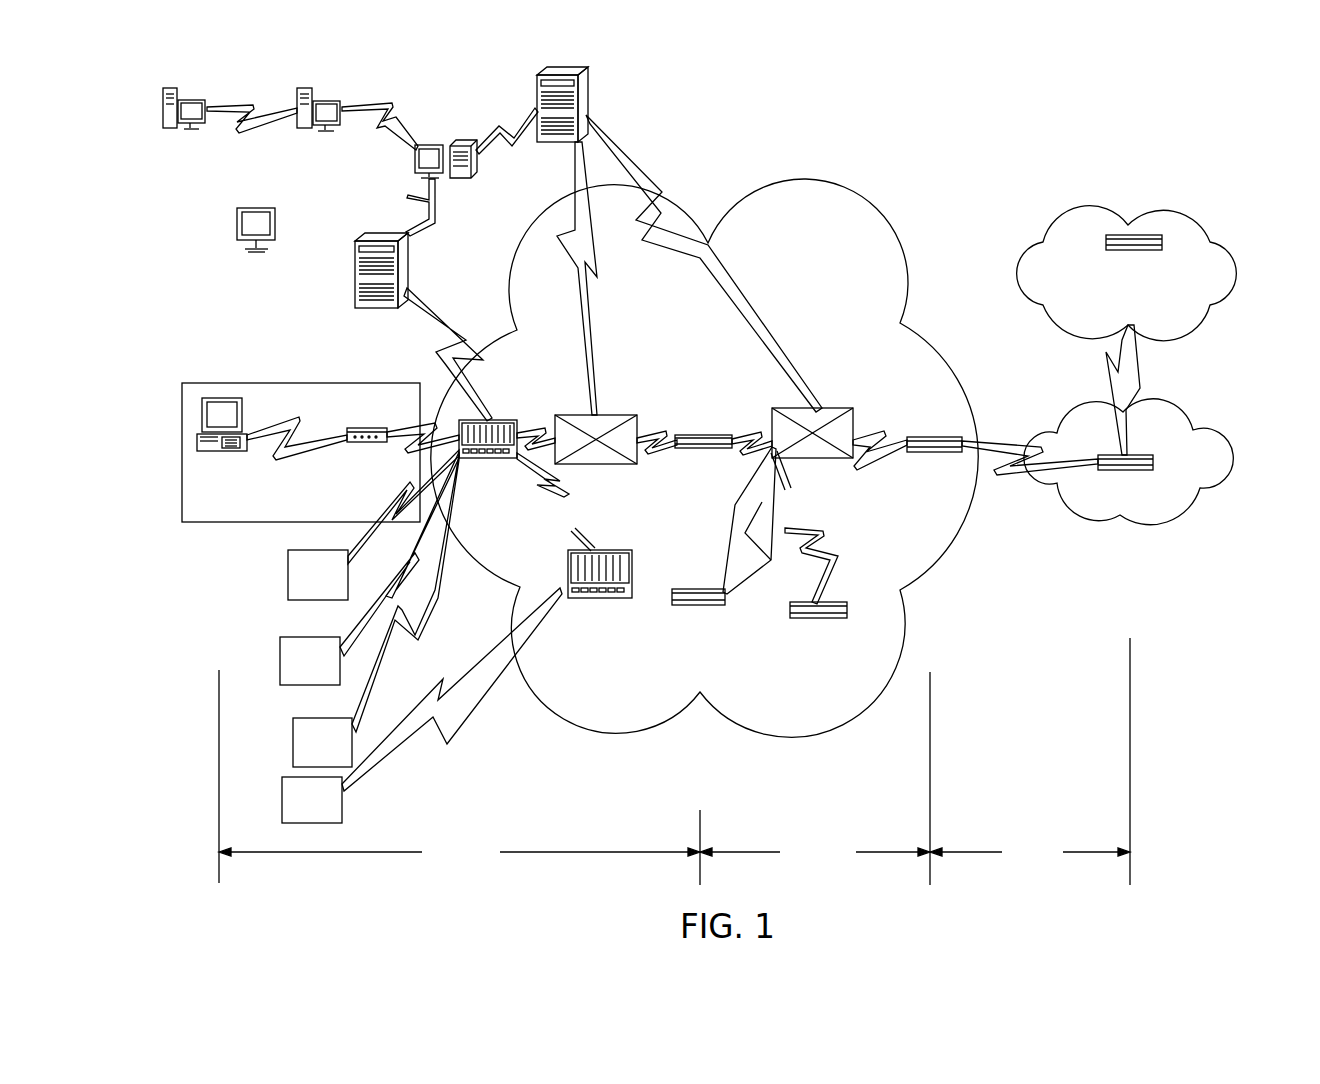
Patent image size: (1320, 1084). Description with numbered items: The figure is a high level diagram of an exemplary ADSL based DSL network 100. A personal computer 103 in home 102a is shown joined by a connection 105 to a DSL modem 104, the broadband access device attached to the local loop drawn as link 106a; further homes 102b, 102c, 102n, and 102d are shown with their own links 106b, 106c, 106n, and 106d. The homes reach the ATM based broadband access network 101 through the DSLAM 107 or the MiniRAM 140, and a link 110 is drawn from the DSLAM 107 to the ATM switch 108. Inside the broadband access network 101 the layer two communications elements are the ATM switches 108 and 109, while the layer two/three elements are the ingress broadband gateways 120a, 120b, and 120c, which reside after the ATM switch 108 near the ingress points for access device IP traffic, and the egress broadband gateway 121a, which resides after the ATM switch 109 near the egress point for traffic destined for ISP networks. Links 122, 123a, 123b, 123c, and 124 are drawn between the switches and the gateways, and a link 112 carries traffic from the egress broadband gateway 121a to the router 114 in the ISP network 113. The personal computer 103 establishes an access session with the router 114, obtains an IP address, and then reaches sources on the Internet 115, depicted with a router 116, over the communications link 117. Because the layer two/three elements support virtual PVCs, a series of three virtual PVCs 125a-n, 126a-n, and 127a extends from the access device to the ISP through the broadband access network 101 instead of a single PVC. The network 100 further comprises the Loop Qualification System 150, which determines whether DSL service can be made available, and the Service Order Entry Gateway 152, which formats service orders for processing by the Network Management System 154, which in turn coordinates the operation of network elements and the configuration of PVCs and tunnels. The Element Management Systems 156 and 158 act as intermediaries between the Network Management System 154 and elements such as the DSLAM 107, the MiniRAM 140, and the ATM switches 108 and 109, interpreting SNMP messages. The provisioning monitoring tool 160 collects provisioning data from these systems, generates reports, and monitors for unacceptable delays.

The DSL network 100 is at (1000, 661).
The broadband access network 101 is at (704, 439).
The home 102a is at (301, 466).
The home 102b is at (335, 598).
The home 102c is at (328, 684).
The home 102n is at (340, 765).
The home 102d is at (330, 821).
The personal computer 103 is at (220, 452).
The DSL modem 104 is at (367, 443).
The link between PC and modem 105 is at (293, 460).
The link 106a is at (428, 428).
The link 106b is at (367, 540).
The link 106c is at (360, 611).
The link 106n is at (447, 618).
The link 106d is at (477, 705).
The DSLAM 107 is at (493, 460).
The ATM switch 108 is at (597, 465).
The ATM switch 109 is at (810, 460).
The link DSLAM to ATM switch 110 is at (531, 422).
The link egress gateway to ISP router 112 is at (1002, 477).
The ISP network 113 is at (1128, 485).
The router 114 is at (1125, 471).
The Internet 115 is at (1053, 227).
The Internet router 116 is at (1133, 251).
The communications link 117 is at (1137, 370).
The ingress broadband gateway 120a is at (692, 449).
The ingress broadband gateway 120b is at (700, 607).
The ingress broadband gateway 120c is at (818, 619).
The egress broadband gateway 121a is at (935, 453).
The link ATM switch to ingress gateway 122 is at (658, 432).
The link ingress gateway to ATM switch 123a is at (743, 432).
The link ATM switch to ingress gateway 123b is at (751, 524).
The link ATM switch to ingress gateway 123c is at (828, 540).
The link ATM switch to egress gateway 124 is at (877, 433).
The vPVC1a 125a-n is at (459, 855).
The vPVC2a 126a-n is at (815, 855).
The vPVC3a 127a is at (1030, 855).
The MiniRAM 140 is at (600, 599).
The Loop Qualification System 150 is at (188, 131).
The Service Order Entry Gateway 152 is at (325, 133).
The Network Management System 154 is at (463, 179).
The Element Management System 156 is at (378, 309).
The Element Management System 158 is at (552, 143).
The provisioning monitoring tool 160 is at (257, 254).